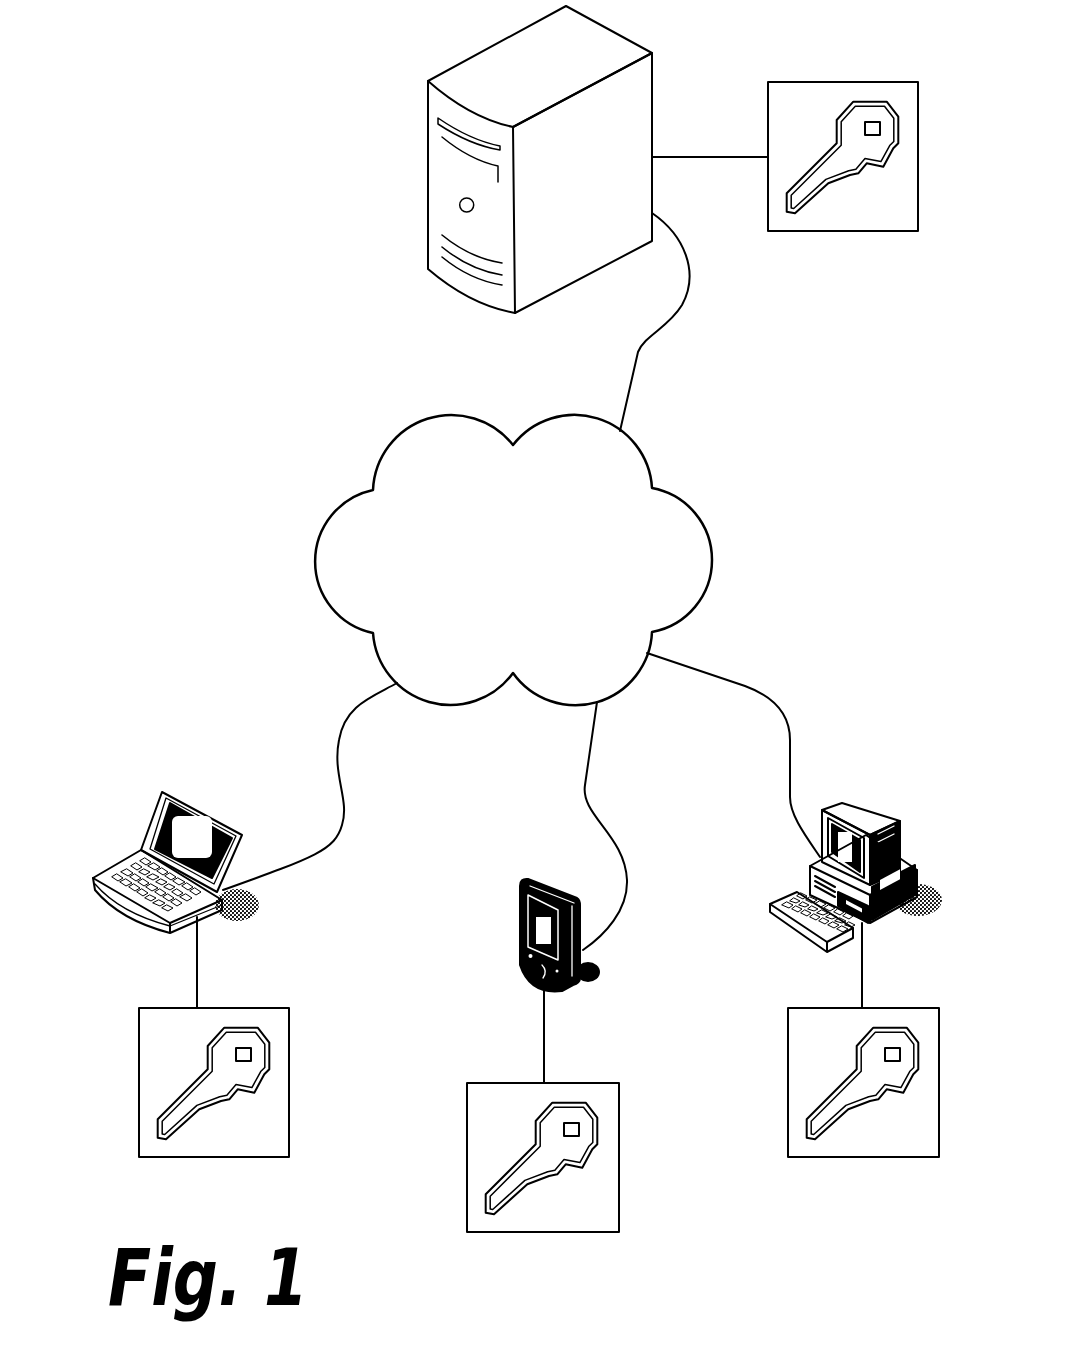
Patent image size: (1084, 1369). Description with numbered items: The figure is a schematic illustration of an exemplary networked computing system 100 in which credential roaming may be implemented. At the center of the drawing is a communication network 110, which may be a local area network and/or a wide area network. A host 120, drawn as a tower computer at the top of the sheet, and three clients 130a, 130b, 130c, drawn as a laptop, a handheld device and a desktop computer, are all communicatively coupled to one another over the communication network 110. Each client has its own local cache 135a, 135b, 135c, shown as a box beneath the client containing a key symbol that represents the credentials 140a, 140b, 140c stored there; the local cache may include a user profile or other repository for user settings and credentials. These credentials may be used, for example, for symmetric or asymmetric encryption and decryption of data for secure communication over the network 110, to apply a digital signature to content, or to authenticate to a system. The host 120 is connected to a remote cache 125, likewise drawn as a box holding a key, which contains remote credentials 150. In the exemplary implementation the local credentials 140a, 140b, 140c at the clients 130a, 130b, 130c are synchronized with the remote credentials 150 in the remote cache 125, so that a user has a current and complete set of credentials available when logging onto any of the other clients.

The networked computing system 100 is at (197, 104).
The communication network 110 is at (386, 455).
The host 120 is at (428, 181).
The remote cache 125 is at (840, 82).
The remote credentials 150 is at (843, 164).
The client 130a is at (163, 792).
The client 130b is at (533, 878).
The client 130c is at (810, 866).
The local cache 135a is at (242, 1008).
The local cache 135b is at (467, 1167).
The local cache 135c is at (788, 1080).
The credentials 140a is at (216, 1090).
The credentials 140b is at (545, 1165).
The credentials 140c is at (866, 1090).